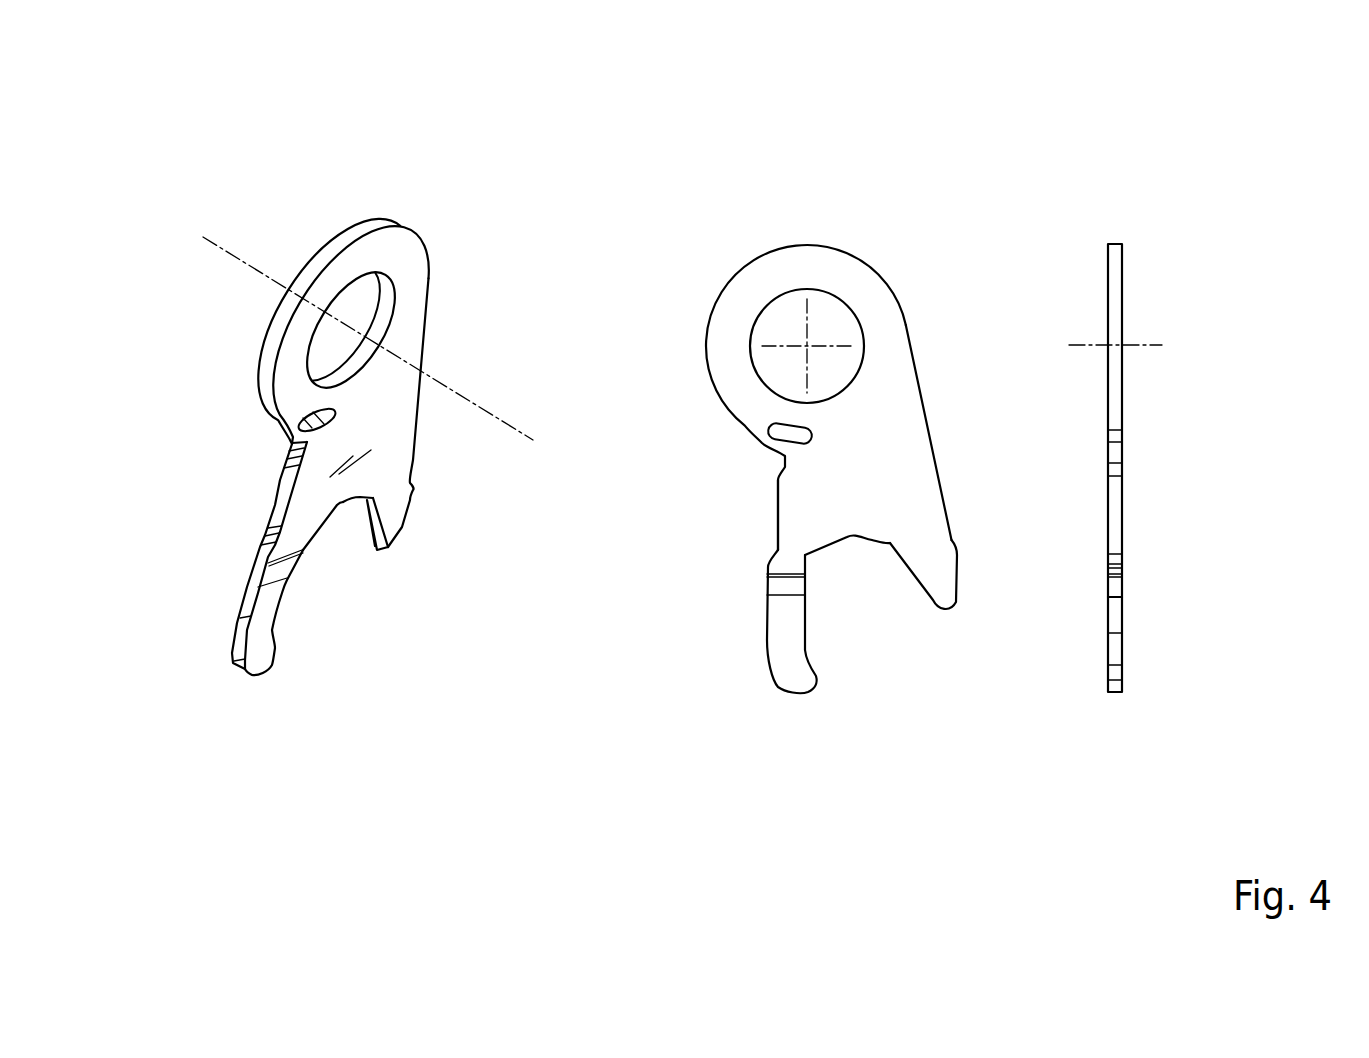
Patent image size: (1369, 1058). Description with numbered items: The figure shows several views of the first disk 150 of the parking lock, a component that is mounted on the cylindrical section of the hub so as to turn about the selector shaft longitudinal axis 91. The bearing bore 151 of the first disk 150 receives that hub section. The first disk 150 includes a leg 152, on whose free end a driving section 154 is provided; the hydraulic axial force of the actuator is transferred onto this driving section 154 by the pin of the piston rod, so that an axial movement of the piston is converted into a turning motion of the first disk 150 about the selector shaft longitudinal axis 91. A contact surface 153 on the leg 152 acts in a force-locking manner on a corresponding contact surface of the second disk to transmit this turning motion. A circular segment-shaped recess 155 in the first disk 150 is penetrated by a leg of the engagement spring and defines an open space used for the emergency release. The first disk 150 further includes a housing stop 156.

The selector shaft longitudinal axis 91 is at (250, 263).
The first disk 150 is at (382, 430).
The bearing bore 151 is at (362, 303).
The leg 152 is at (308, 520).
The contact surface 153 is at (280, 488).
The driving section 154 is at (265, 613).
The recess 155 is at (283, 417).
The housing stop 156 is at (410, 517).